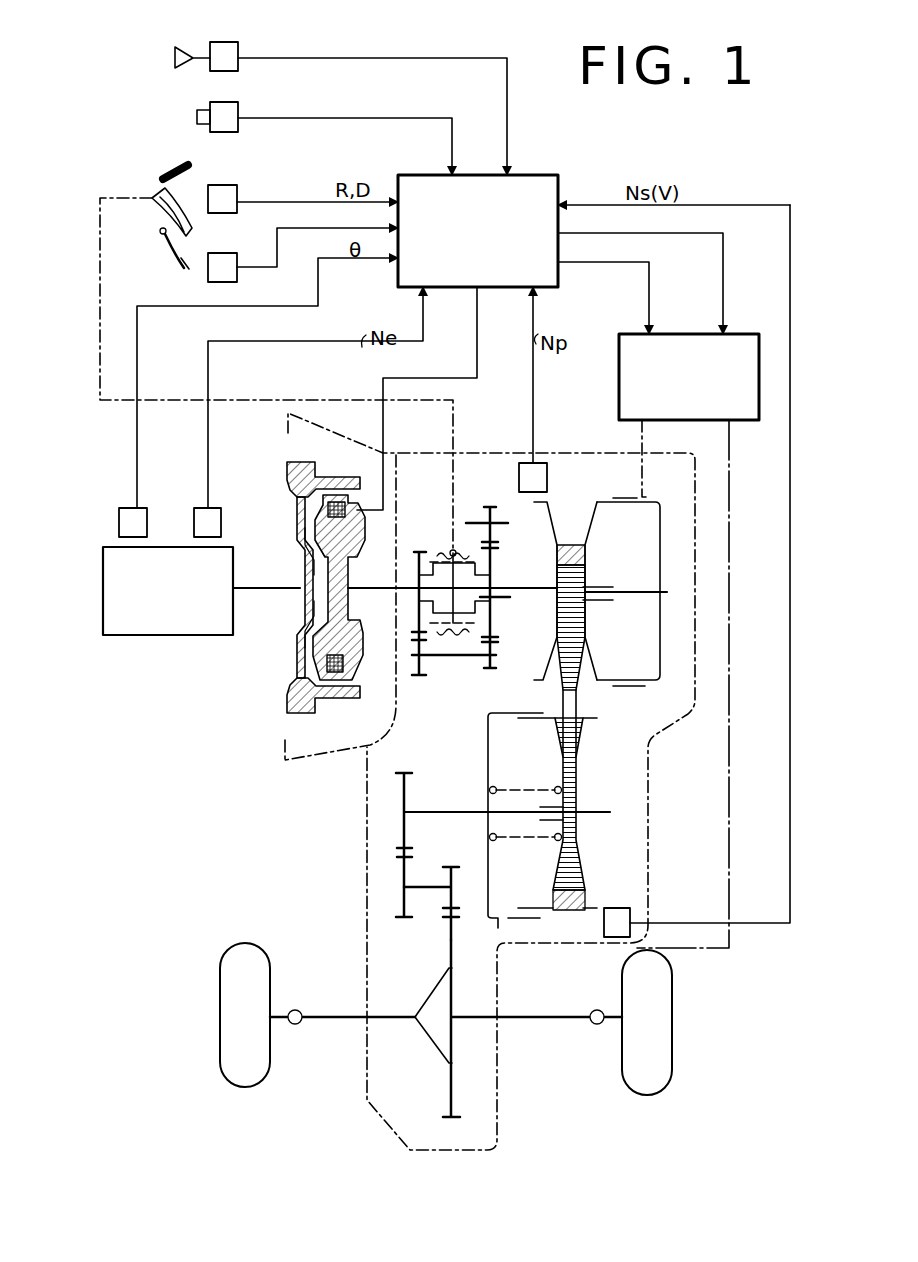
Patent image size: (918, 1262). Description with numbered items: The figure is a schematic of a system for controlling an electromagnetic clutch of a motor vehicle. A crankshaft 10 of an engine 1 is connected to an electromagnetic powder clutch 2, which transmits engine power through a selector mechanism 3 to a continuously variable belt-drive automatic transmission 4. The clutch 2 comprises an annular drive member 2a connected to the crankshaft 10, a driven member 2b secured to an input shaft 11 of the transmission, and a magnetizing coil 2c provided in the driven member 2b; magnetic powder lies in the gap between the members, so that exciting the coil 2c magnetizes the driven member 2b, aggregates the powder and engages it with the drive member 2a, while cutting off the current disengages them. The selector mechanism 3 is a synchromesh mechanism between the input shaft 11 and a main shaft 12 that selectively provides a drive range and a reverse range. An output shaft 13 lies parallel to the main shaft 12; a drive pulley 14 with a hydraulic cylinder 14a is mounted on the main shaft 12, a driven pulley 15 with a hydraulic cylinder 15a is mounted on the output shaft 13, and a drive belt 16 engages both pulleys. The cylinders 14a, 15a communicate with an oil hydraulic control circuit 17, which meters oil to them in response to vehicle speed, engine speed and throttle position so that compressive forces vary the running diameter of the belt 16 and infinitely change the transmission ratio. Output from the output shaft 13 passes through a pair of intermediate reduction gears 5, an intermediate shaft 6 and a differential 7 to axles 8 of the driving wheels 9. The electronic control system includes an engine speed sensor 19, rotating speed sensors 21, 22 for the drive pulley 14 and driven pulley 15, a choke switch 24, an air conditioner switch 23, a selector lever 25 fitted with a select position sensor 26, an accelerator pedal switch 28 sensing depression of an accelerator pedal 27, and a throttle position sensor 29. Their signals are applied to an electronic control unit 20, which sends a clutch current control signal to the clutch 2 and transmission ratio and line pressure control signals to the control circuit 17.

The engine 1 is at (133, 636).
The electromagnetic powder clutch 2 is at (314, 580).
The annular drive member 2a is at (288, 470).
The driven member 2b is at (352, 540).
The magnetizing coil 2c is at (350, 500).
The selector mechanism 3 is at (440, 543).
The continuously variable belt-drive automatic transmission 4 is at (572, 699).
The intermediate reduction gears 5 is at (405, 772).
The intermediate shaft 6 is at (424, 886).
The differential 7 is at (432, 992).
The axles 8 is at (339, 1012).
The vehicle driving wheels 9 is at (270, 1062).
The crankshaft 10 is at (278, 589).
The input shaft 11 is at (373, 589).
The main shaft 12 is at (536, 598).
The output shaft 13 is at (447, 812).
The drive pulley 14 is at (548, 534).
The hydraulic cylinder 14a is at (648, 565).
The driven pulley 15 is at (588, 722).
The hydraulic cylinder 15a is at (503, 733).
The drive belt 16 is at (555, 696).
The oil hydraulic control circuit 17 is at (619, 380).
The engine speed sensor 19 is at (194, 508).
The electronic control unit 20 is at (557, 174).
The rotating speed sensor 21 is at (547, 478).
The rotating speed sensor 22 is at (617, 907).
The air conditioner switch 23 is at (242, 110).
The choke switch 24 is at (242, 48).
The selector lever 25 is at (165, 176).
The select position sensor 26 is at (237, 191).
The accelerator pedal 27 is at (167, 260).
The accelerator pedal switch 28 is at (237, 261).
The throttle position sensor 29 is at (124, 508).